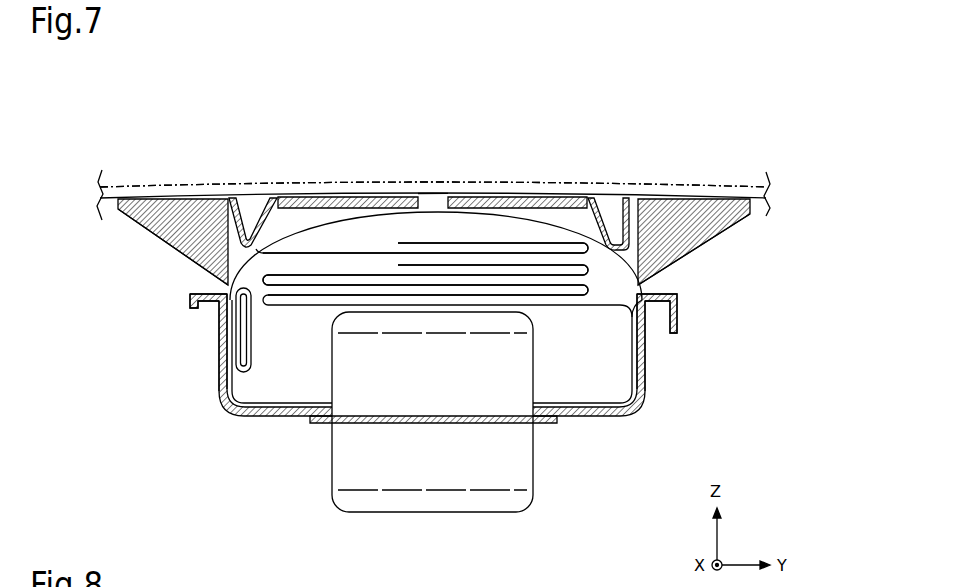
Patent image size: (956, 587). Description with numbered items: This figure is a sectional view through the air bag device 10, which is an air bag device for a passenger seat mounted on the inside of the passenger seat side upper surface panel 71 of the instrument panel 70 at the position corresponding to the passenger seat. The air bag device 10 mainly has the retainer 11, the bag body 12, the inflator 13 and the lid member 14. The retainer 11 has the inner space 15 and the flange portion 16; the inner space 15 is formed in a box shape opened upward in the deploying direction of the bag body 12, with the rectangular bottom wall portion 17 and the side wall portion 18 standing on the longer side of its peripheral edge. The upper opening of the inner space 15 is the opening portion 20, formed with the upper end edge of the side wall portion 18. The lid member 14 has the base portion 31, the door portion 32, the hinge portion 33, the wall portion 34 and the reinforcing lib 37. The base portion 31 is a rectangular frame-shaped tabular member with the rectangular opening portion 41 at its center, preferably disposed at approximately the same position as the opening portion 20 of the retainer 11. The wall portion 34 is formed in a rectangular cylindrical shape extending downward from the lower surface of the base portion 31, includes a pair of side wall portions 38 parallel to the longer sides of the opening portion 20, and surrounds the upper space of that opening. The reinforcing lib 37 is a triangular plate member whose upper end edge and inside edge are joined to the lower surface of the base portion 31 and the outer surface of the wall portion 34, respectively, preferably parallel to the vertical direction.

The air bag device 10 is at (758, 150).
The retainer 11 is at (648, 386).
The bag body 12 is at (335, 248).
The inflator 13 is at (455, 513).
The lid member 14 is at (729, 237).
The inner space 15 is at (598, 420).
The flange portion 16 is at (190, 296).
The bottom wall portion 17 is at (253, 418).
The side wall portion 18 is at (219, 354).
The opening portion 20 is at (634, 262).
The base portion 31 is at (100, 210).
The door portion 32 is at (388, 197).
The hinge portion 33 is at (258, 226).
The wall portion 34 is at (266, 256).
The reinforcing lib 37 is at (175, 249).
The side wall portions 38 is at (612, 266).
The opening portion 41 is at (433, 200).
The instrument panel 70 is at (684, 186).
The passenger seat side upper surface panel 71 is at (433, 145).